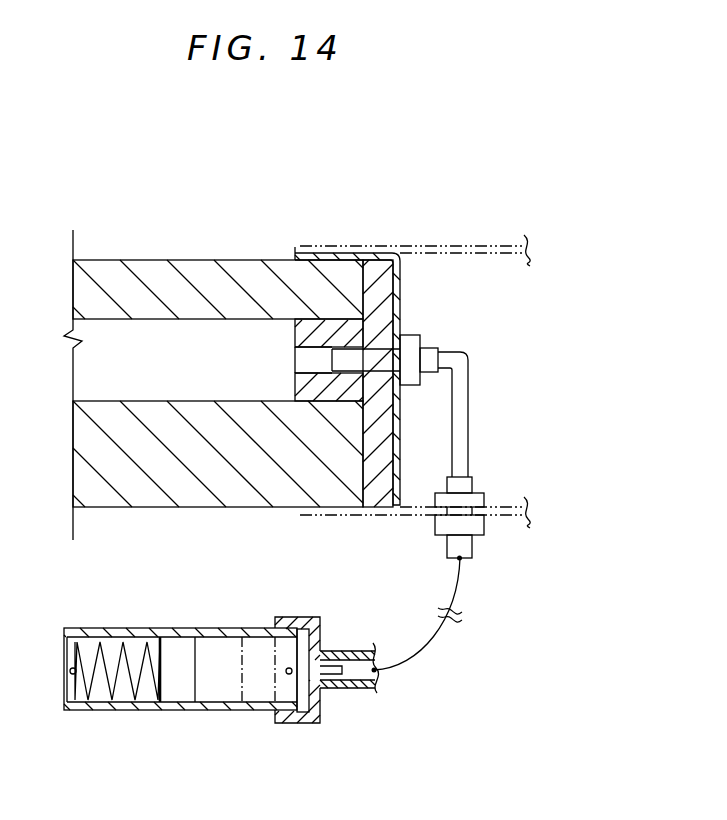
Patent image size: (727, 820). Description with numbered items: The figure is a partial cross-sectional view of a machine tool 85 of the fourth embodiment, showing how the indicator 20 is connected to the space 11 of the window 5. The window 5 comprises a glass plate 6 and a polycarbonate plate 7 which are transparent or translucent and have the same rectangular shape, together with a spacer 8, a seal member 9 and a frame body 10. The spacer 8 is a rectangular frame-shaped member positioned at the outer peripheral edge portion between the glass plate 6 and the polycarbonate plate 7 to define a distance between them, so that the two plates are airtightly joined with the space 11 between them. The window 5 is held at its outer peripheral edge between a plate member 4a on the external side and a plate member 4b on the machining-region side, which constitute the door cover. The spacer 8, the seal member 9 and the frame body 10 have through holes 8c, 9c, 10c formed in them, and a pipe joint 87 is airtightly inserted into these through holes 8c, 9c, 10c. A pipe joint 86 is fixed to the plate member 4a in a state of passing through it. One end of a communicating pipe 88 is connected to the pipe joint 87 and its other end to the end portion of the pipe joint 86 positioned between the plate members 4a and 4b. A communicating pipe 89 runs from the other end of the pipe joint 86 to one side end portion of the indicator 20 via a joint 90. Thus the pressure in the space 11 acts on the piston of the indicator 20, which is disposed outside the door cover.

The machine tool 85 is at (84, 197).
The window 5 is at (182, 224).
The glass plate 6 is at (78, 291).
The polycarbonate plate 7 is at (73, 471).
The space 11 is at (86, 376).
The spacer 8 is at (308, 392).
The through hole 8c is at (330, 365).
The through hole 10c is at (403, 352).
The through hole 9c is at (381, 365).
The seal member 9 is at (383, 262).
The frame body 10 is at (399, 270).
The plate member 4b is at (346, 245).
The plate member 4a is at (341, 520).
The pipe joint 87 is at (438, 358).
The communicating pipe 88 is at (468, 428).
The pipe joint 86 is at (483, 492).
The communicating pipe 89 is at (455, 603).
The indicator 20 is at (195, 711).
The joint 90 is at (308, 722).